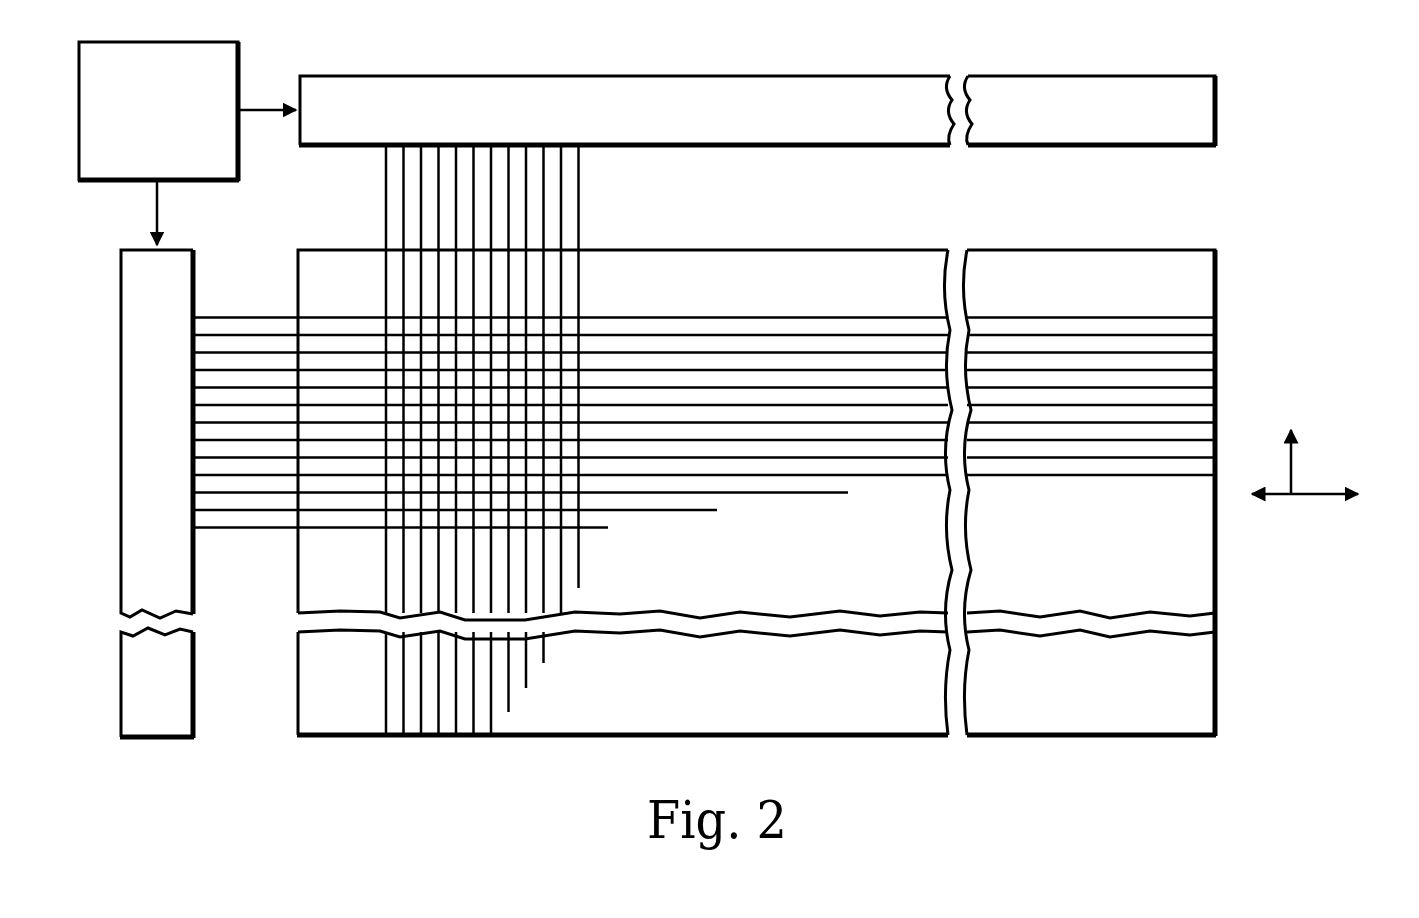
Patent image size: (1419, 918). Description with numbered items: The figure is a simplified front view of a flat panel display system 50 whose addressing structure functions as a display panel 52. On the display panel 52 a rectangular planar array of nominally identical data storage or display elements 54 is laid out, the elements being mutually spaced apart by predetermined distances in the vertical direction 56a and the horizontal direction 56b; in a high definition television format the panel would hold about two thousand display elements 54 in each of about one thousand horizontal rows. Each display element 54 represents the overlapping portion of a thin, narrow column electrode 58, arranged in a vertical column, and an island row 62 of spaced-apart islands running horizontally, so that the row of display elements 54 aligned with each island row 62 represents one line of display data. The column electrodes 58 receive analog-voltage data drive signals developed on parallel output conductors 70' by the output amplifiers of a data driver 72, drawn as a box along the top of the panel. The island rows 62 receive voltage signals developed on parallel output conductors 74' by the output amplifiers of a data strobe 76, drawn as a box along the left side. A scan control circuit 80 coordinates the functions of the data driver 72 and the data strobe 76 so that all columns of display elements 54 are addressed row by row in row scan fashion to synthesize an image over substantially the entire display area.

The flat panel display system 50 is at (704, 480).
The display panel 52 is at (903, 746).
The display elements 54 is at (437, 315).
The vertical direction 56a is at (1293, 456).
The horizontal direction 56b is at (1318, 496).
The column electrodes 58 is at (543, 573).
The island rows 62 is at (778, 355).
The parallel output conductors 70' is at (434, 441).
The data driver 72 is at (1013, 76).
The parallel output conductors 74' is at (704, 396).
The data strobe 76 is at (119, 340).
The scan control circuit 80 is at (79, 97).